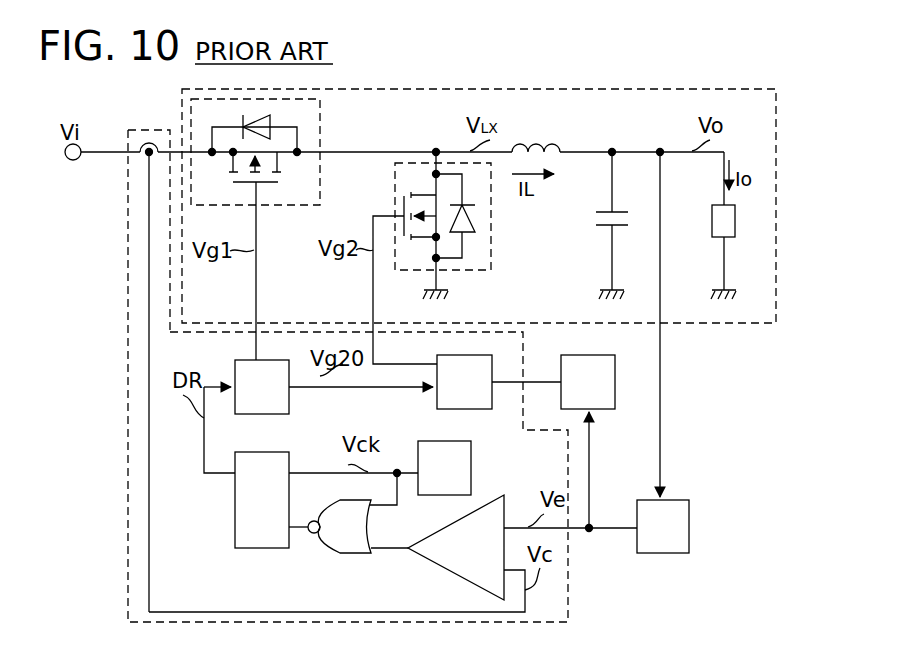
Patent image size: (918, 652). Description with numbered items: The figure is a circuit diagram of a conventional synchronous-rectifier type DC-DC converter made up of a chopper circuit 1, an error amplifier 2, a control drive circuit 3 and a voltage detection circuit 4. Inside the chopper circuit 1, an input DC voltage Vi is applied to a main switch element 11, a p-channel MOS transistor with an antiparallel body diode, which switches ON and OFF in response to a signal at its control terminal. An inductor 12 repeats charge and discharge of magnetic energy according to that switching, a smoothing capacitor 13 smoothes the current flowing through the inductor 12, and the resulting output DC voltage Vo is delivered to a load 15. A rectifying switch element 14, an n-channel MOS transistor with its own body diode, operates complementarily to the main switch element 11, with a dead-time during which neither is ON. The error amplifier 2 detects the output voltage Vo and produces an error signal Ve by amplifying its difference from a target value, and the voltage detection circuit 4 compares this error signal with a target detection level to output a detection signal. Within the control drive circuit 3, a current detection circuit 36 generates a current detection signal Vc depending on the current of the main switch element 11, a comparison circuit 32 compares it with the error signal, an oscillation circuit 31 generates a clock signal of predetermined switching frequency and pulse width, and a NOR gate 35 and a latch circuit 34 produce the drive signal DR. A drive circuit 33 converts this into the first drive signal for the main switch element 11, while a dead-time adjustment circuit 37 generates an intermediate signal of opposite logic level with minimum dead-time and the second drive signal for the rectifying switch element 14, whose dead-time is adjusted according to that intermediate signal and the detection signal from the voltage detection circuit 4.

The chopper circuit 1 is at (724, 89).
The main switch element 11 is at (320, 128).
The inductor 12 is at (557, 143).
The smoothing capacitor 13 is at (610, 230).
The rectifying switch element 14 is at (492, 240).
The load 15 is at (712, 238).
The error amplifier 2 is at (690, 530).
The control drive circuit 3 is at (128, 503).
The oscillation circuit 31 is at (473, 466).
The comparison circuit 32 is at (434, 570).
The drive circuit 33 is at (290, 396).
The latch circuit 34 is at (235, 529).
The NOR gate 35 is at (327, 556).
The current detection circuit 36 is at (146, 160).
The dead-time adjustment circuit 37 is at (436, 408).
The voltage detection circuit 4 is at (617, 393).